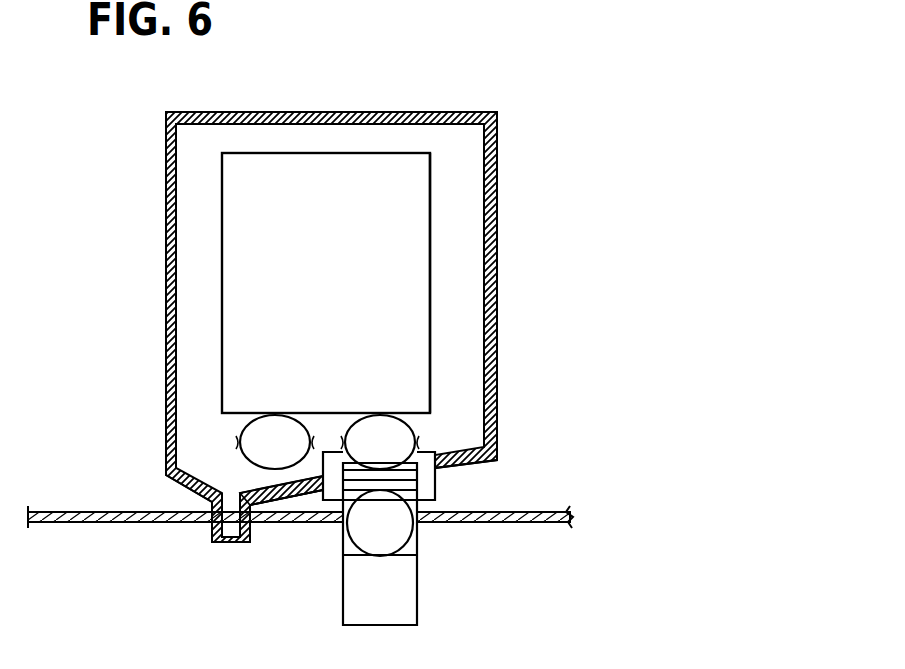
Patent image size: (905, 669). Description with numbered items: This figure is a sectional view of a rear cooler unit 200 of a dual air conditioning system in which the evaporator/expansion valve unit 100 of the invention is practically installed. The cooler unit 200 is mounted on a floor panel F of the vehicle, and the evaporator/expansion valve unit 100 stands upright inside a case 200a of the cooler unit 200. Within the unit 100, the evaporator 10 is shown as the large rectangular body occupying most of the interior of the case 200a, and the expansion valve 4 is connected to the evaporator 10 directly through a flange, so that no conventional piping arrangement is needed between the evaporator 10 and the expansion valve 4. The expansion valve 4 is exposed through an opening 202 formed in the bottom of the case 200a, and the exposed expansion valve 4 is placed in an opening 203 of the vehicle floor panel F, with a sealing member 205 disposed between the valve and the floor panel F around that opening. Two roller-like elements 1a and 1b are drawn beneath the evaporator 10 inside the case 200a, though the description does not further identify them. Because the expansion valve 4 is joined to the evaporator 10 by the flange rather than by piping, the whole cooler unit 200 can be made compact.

The rear cooler unit 200 is at (620, 76).
The case 200a is at (278, 112).
The evaporator/expansion valve unit 100 is at (431, 224).
The evaporator 10 is at (432, 288).
The feed roller 1a is at (419, 432).
The feed roller 1b is at (241, 443).
The sealing member 205 is at (436, 495).
The expansion valve 4 is at (418, 543).
The opening of the vehicle floor panel 203 is at (366, 528).
The opening 202 is at (322, 509).
The floor panel F is at (80, 512).